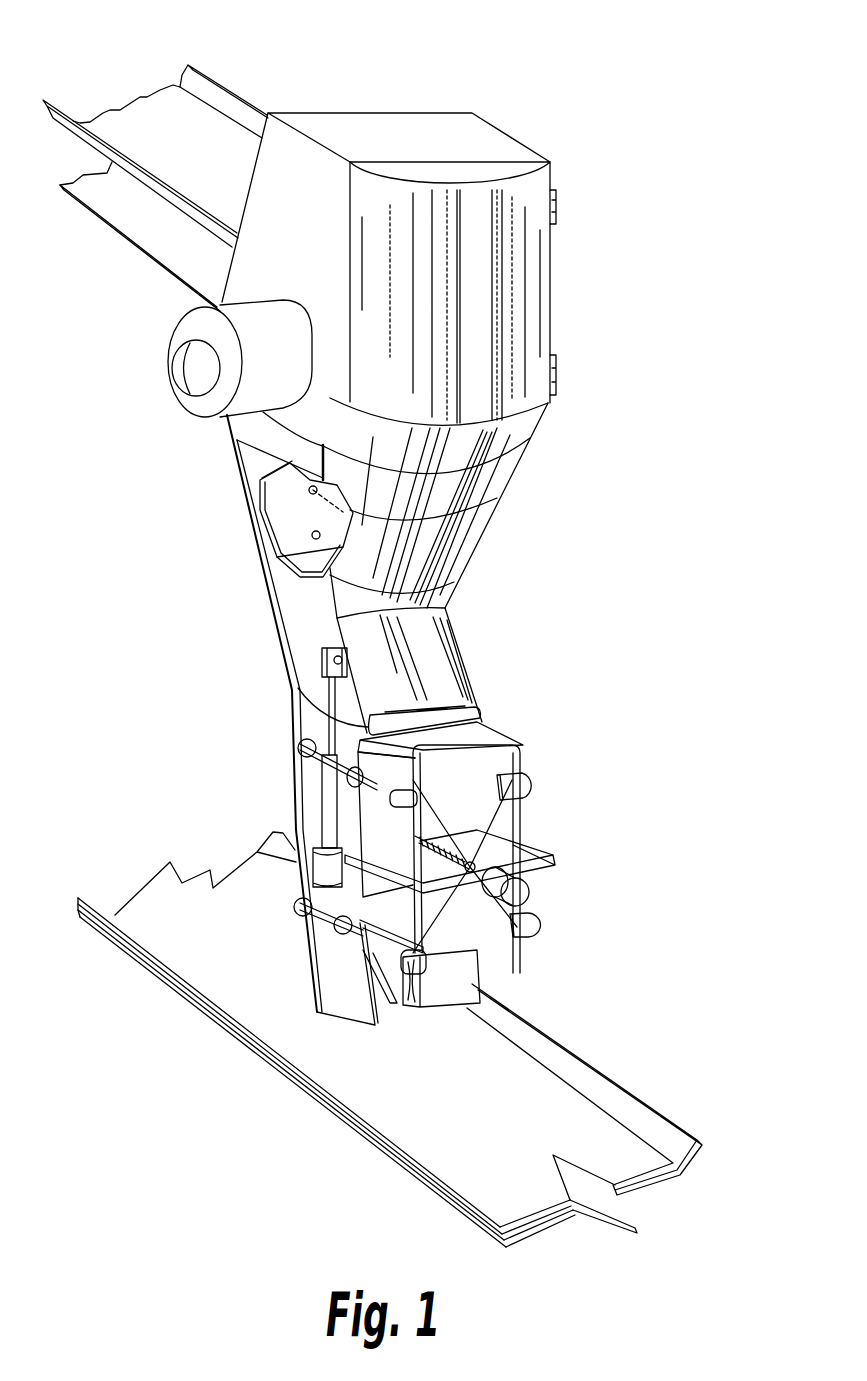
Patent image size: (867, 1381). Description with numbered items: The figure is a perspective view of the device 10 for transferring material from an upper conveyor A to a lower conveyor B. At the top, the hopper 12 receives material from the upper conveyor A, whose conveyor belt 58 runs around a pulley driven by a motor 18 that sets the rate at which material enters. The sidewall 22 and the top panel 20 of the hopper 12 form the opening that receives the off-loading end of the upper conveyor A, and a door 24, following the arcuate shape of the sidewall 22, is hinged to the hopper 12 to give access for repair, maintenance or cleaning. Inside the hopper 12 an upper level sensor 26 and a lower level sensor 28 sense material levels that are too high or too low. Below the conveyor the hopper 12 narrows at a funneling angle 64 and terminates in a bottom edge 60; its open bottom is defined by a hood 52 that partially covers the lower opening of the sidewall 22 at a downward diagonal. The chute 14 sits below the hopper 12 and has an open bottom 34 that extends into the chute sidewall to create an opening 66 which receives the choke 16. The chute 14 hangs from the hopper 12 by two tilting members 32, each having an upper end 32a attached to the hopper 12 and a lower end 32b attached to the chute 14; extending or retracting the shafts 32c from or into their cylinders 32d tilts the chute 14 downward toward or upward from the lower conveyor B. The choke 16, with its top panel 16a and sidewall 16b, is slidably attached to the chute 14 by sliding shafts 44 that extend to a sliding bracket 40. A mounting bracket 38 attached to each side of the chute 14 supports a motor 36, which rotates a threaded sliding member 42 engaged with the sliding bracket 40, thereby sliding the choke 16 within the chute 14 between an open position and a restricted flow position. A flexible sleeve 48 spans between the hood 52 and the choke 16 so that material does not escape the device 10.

The device 10 is at (645, 200).
The hopper 12 is at (433, 568).
The chute 14 is at (290, 787).
The choke 16 is at (466, 836).
The top panel 16a is at (480, 733).
The sidewall 16b is at (410, 938).
The motor 18 is at (275, 368).
The top panel 20 is at (438, 150).
The sidewall 22 is at (298, 238).
The door 24 is at (473, 277).
The upper level sensor 26 is at (309, 492).
The lower level sensor 28 is at (330, 537).
The tilting member 32 is at (272, 756).
The upper end 32a is at (320, 660).
The lower end 32b is at (317, 865).
The shaft 32c is at (330, 722).
The cylinder 32d is at (330, 822).
The open bottom 34 is at (390, 1039).
The motor 36 is at (517, 890).
The mounting bracket 38 is at (370, 875).
The sliding bracket 40 is at (497, 813).
The sliding member 42 is at (435, 840).
The sliding shafts 44 is at (345, 797).
The flexible sleeve 48 is at (320, 707).
The hood 52 is at (450, 627).
The conveyor belt 58 is at (192, 118).
The bottom edge 60 is at (310, 700).
The funneling angle 64 is at (477, 533).
The opening 66 is at (438, 983).
The upper conveyor A is at (121, 91).
The lower conveyor B is at (498, 1100).